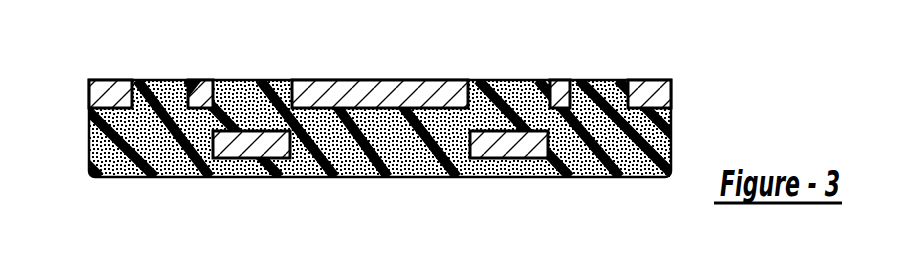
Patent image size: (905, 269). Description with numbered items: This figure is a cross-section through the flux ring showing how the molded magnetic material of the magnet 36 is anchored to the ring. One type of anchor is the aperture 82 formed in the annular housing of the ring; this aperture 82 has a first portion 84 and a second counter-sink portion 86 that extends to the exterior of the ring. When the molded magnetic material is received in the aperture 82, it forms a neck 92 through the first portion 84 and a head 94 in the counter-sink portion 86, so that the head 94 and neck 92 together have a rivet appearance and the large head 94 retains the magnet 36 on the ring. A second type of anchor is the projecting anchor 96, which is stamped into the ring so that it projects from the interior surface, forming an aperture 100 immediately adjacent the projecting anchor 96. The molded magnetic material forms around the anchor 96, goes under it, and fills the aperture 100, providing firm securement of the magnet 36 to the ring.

The aperture anchor 82 is at (124, 79).
The first portion 84 is at (128, 100).
The counter-sink portion 86 is at (118, 90).
The neck 92 is at (167, 90).
The magnet 36 is at (363, 97).
The aperture 100 is at (531, 80).
The projecting anchor 96 is at (579, 82).
The head 94 is at (623, 80).